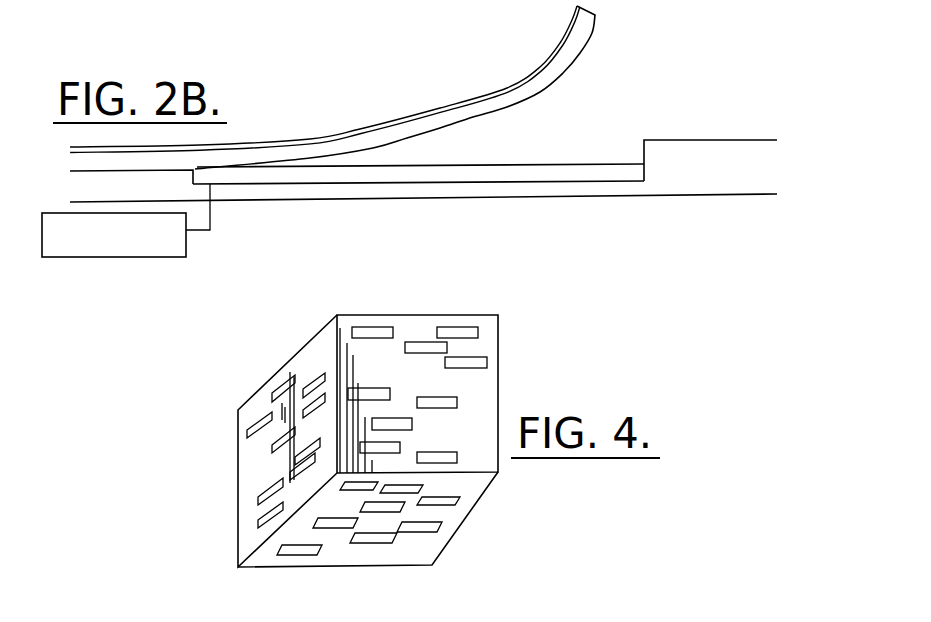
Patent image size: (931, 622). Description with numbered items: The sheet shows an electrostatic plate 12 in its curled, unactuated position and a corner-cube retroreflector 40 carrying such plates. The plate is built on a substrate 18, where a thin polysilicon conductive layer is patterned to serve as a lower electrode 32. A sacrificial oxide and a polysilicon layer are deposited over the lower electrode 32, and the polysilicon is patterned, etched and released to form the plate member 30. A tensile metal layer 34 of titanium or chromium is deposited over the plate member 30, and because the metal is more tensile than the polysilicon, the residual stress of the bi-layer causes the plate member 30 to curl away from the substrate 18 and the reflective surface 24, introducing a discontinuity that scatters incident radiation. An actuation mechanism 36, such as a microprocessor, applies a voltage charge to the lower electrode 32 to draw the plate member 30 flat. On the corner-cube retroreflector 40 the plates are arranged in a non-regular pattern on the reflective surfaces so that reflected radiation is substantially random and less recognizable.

In FIG. 2B, the electrostatic plate 12 is at (670, 15).
In FIG. 2B, the substrate 18 is at (709, 183).
In FIG. 2B, the reflective surface 24 is at (716, 140).
In FIG. 2B, the plate member 30 is at (582, 57).
In FIG. 2B, the lower electrode 32 is at (530, 170).
In FIG. 2B, the metal layer 34 is at (518, 72).
In FIG. 2B, the actuation mechanism 36 is at (143, 257).
In FIG. 4, the corner-cube retroreflector 40 is at (512, 278).